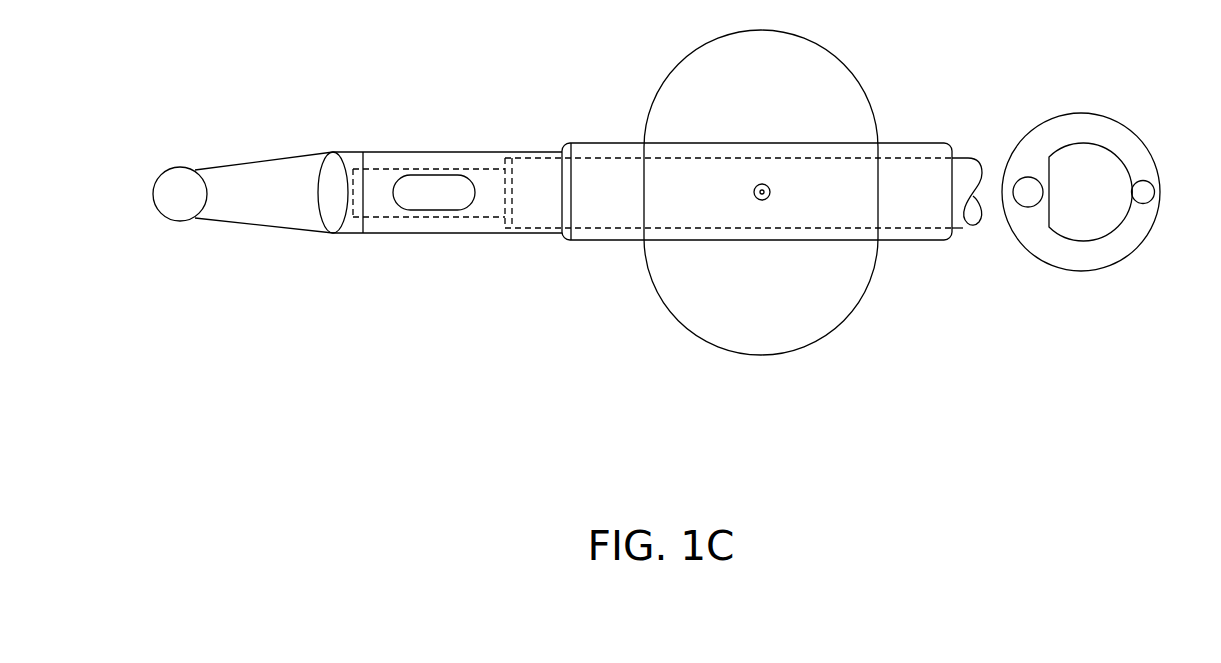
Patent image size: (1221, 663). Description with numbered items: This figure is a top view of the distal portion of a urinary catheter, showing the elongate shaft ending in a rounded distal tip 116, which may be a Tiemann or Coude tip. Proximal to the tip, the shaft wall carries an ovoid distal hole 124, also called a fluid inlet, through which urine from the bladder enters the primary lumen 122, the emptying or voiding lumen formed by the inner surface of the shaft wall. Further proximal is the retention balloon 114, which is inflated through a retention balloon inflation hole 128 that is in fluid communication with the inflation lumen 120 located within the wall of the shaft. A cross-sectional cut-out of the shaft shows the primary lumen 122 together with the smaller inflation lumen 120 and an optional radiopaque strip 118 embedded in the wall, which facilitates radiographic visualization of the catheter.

The retention balloon 114 is at (762, 356).
The distal tip 116 is at (182, 168).
The radiopaque strip 118 is at (1143, 190).
The inflation lumen 120 is at (1030, 193).
The primary lumen 122 is at (1082, 162).
The distal hole 124 is at (440, 195).
The retention balloon inflation hole 128 is at (762, 183).